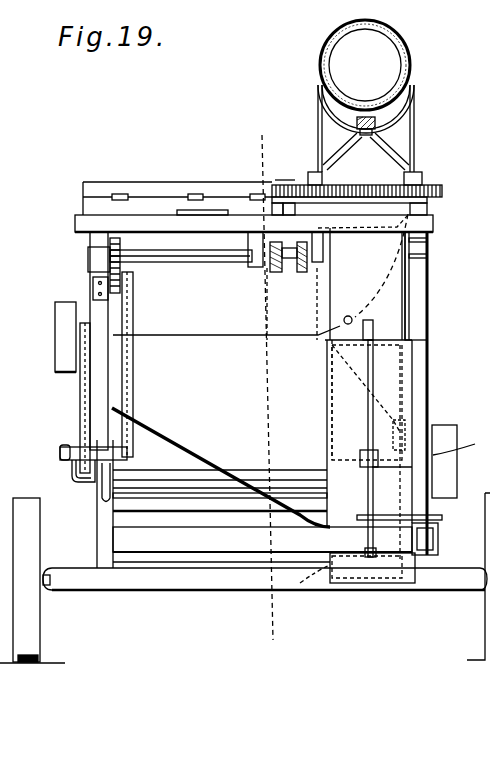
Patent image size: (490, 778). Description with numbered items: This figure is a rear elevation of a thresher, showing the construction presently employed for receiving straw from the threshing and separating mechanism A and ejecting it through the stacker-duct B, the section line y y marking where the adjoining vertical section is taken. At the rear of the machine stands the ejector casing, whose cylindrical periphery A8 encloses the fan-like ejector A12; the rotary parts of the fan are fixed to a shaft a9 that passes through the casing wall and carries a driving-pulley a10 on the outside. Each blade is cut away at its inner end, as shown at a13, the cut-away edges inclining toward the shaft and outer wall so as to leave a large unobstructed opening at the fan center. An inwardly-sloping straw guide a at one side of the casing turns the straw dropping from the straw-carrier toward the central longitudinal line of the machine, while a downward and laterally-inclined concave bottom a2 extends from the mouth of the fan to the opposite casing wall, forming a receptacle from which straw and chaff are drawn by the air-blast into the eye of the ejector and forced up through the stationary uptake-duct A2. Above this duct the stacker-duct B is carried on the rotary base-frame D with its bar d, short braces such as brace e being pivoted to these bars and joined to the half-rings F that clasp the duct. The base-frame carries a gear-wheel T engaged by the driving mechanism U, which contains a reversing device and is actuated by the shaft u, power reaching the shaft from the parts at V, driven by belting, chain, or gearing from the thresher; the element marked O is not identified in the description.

The threshing and separating mechanism A is at (245, 578).
The stationary uptake-duct A2 is at (395, 275).
The cylindrical periphery A8 is at (393, 393).
The ejector or fan A12 is at (350, 585).
The straw guide or chute a is at (395, 258).
The inclined chute or bottom a2 is at (178, 440).
The shaft a9 is at (457, 442).
The driving-pulley a10 is at (444, 461).
The cut-away edges a13 is at (310, 590).
The stacking tube or duct B is at (382, 65).
The rings or half-rings F is at (408, 102).
The brace e is at (350, 141).
The bar d is at (420, 173).
The rotary base-frame D is at (285, 171).
The gear-wheel T is at (365, 192).
The driving mechanism U is at (349, 214).
The shaft u is at (181, 265).
The power-receiving parts V is at (226, 327).
The eccentric O is at (343, 320).
The section line y is at (263, 390).